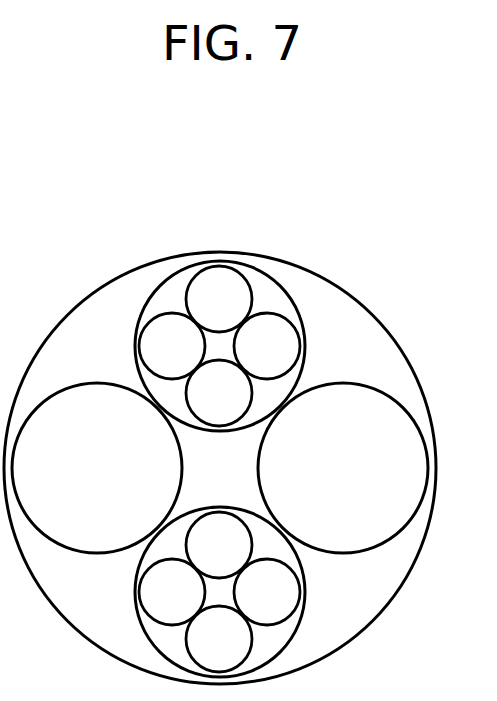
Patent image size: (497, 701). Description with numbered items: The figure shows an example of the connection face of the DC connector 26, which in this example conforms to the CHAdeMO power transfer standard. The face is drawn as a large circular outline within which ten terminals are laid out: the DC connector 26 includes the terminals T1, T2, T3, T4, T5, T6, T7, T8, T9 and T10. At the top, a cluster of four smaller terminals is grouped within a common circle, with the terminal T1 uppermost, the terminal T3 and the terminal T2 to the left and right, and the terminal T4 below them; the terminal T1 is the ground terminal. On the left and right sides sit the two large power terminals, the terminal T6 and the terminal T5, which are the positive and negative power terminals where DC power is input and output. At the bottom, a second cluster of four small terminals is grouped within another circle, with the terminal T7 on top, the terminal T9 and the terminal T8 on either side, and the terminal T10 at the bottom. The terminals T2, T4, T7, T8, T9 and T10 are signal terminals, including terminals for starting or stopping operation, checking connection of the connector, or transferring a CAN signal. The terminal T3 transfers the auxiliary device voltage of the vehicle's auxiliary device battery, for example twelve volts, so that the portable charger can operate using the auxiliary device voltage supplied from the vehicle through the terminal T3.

The DC connector 26 is at (360, 249).
The ground terminal T1 is at (219, 299).
The signal terminal T2 is at (267, 346).
The auxiliary device voltage terminal T3 is at (172, 346).
The signal terminal T4 is at (219, 393).
The power terminal T5 is at (343, 468).
The power terminal T6 is at (97, 468).
The signal terminal T7 is at (219, 545).
The signal terminal T8 is at (267, 592).
The signal terminal T9 is at (172, 592).
The signal terminal T10 is at (219, 639).